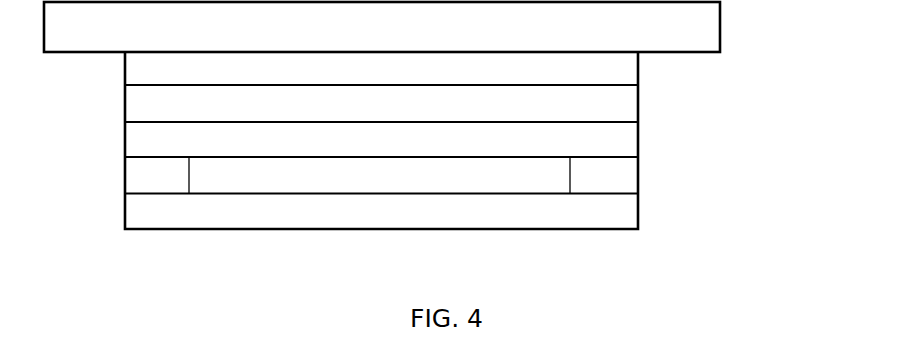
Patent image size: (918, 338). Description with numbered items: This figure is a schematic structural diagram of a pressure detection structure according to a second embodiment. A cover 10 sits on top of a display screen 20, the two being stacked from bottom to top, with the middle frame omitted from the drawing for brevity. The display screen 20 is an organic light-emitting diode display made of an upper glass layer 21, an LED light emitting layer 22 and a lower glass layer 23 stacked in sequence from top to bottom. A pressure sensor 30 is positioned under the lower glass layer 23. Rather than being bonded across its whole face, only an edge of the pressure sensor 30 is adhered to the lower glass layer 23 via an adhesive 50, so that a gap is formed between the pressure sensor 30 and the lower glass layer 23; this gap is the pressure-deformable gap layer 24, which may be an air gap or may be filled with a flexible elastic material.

The cover 10 is at (702, 28).
The display screen 20 is at (748, 62).
The upper glass layer 21 is at (622, 68).
The LED light emitting layer 22 is at (625, 107).
The lower glass layer 23 is at (622, 140).
The gap layer 24 is at (305, 183).
The pressure sensor 30 is at (628, 215).
The adhesive 50 is at (622, 179).